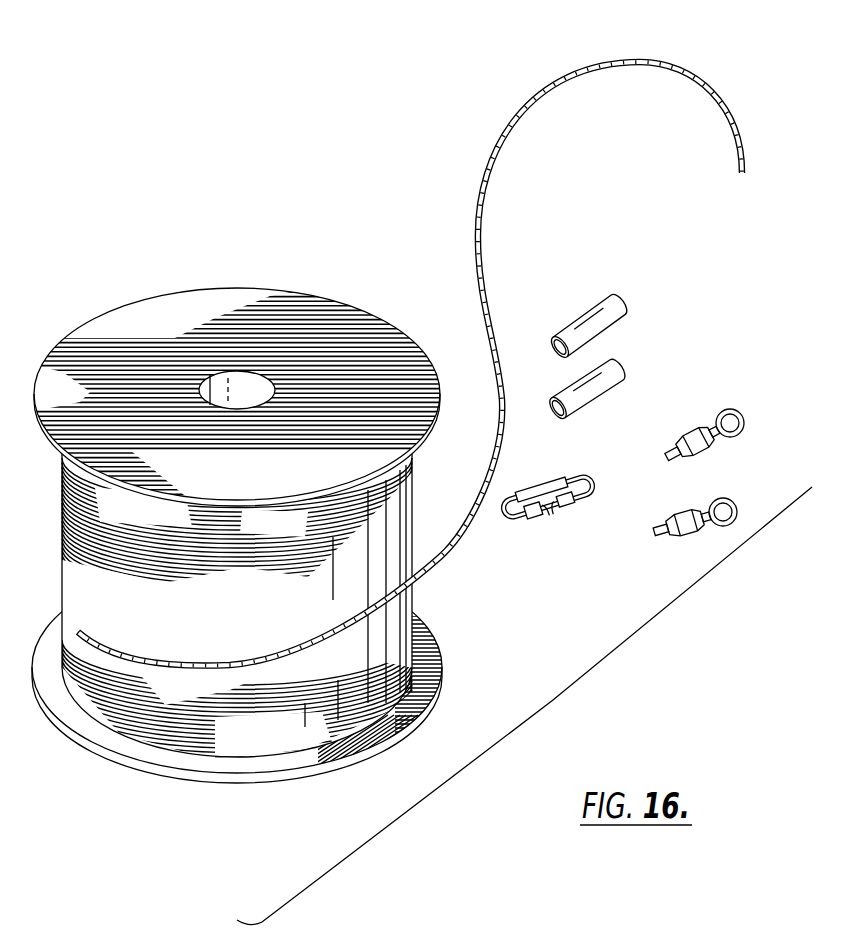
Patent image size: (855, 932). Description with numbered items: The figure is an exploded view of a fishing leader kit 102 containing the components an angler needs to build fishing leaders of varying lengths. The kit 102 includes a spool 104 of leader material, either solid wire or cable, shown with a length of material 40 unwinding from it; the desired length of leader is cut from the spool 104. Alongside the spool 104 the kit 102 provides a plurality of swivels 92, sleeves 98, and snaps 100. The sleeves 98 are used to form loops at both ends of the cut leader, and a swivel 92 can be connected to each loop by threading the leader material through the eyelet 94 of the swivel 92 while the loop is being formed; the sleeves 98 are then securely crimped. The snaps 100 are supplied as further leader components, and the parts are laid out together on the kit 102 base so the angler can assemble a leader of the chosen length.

The wire 40 is at (641, 60).
The spool 104 is at (255, 289).
The sleeves 98 is at (603, 352).
The eyelet 94 is at (740, 409).
The swivels 92 is at (697, 465).
The snaps 100 is at (574, 513).
The fishing leader kit 102 is at (560, 695).